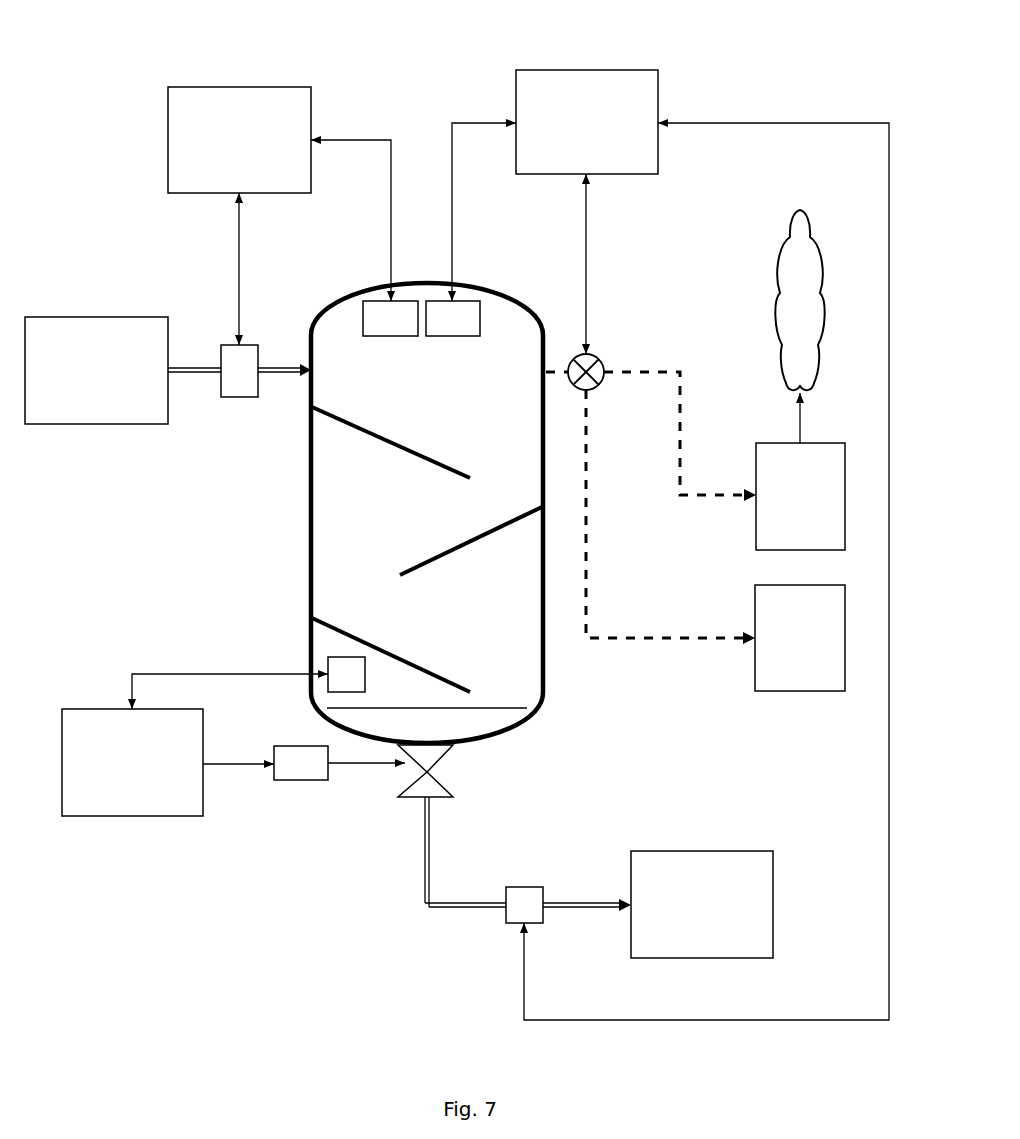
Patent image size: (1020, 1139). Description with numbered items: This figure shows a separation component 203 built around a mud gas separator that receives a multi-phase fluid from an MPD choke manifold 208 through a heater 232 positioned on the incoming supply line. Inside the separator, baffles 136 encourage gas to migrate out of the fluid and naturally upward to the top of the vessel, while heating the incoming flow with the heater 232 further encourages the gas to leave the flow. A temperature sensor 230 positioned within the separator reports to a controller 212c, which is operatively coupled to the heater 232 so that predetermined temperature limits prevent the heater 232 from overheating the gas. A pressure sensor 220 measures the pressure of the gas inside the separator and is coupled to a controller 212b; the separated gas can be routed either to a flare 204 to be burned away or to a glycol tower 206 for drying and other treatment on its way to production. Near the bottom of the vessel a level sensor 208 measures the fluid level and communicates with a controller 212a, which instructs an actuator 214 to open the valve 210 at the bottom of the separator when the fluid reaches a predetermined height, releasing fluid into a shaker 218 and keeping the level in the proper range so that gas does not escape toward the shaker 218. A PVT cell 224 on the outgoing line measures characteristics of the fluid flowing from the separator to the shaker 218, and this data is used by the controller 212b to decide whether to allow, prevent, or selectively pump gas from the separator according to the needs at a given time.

The separation component 203 is at (688, 64).
The baffles 136 is at (375, 432).
The temperature sensor 230 is at (363, 328).
The pressure sensor 220 is at (480, 318).
The controller 212c is at (216, 87).
The controller 212b is at (559, 70).
The controller 212a is at (90, 709).
The level sensor 208 is at (128, 317).
The heater 232 is at (238, 397).
The flare unit 204 is at (756, 472).
The glycol tower 206 is at (783, 691).
The actuator 214 is at (303, 780).
The valve 210 is at (412, 786).
The PVT cell 224 is at (524, 887).
The shaker 218 is at (702, 851).